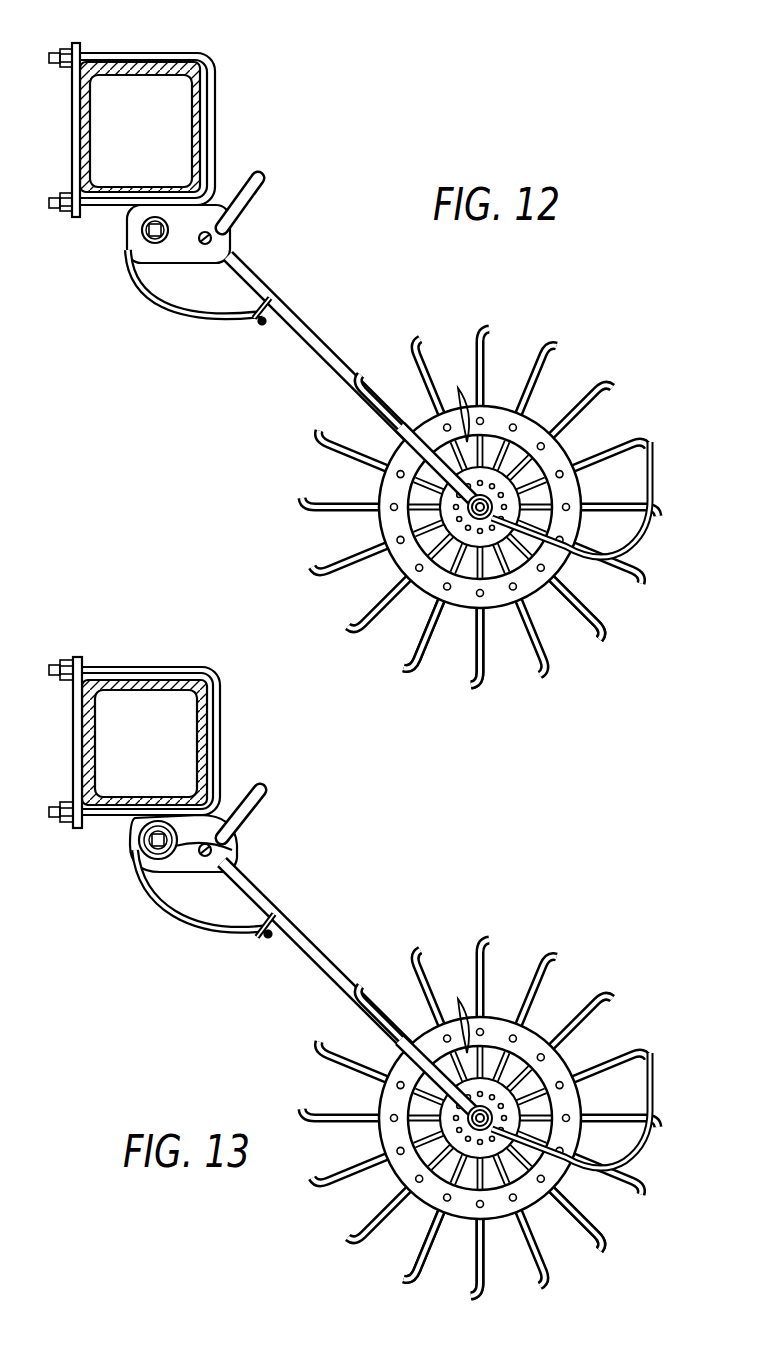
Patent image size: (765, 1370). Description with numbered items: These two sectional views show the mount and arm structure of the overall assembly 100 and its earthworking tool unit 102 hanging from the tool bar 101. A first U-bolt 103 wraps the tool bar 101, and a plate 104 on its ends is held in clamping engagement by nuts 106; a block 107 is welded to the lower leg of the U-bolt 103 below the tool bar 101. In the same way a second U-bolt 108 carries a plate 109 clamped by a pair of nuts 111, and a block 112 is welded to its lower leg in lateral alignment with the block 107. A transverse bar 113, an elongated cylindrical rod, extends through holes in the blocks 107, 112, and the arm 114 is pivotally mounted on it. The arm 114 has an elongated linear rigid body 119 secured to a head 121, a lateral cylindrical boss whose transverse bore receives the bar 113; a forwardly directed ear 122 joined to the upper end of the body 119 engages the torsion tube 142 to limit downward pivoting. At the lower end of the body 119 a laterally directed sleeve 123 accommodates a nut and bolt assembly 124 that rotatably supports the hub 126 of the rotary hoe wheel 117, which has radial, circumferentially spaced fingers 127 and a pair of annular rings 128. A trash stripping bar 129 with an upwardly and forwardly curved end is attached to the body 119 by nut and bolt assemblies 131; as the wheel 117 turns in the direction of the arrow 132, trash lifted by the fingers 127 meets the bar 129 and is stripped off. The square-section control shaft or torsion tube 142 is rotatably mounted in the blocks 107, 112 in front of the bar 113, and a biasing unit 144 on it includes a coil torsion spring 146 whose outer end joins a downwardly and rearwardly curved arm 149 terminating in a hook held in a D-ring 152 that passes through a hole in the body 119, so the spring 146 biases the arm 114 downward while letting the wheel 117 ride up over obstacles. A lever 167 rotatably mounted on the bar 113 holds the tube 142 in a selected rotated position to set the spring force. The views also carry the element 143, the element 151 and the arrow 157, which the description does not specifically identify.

In FIG. 12, the rotary hoe assembly 100 is at (342, 137).
In FIG. 13, the rotary hoe assembly 100 is at (413, 830).
In FIG. 12, the tool bar 101 is at (146, 80).
In FIG. 13, the tool bar 101 is at (146, 695).
In FIG. 12, the rotary hoe unit 102 is at (250, 492).
In FIG. 13, the rotary hoe unit 102 is at (325, 1262).
In FIG. 12, the first U-bolt 103 is at (187, 56).
In FIG. 12, the plate 104 is at (77, 43).
In FIG. 12, the nuts 106 is at (68, 72).
In FIG. 12, the block 107 is at (126, 210).
In FIG. 13, the second U-bolt 108 is at (192, 670).
In FIG. 13, the plate 109 is at (78, 657).
In FIG. 13, the nuts 111 is at (68, 685).
In FIG. 13, the block 112 is at (215, 828).
In FIG. 12, the transverse bar 113 is at (207, 238).
In FIG. 13, the transverse bar 113 is at (210, 849).
In FIG. 12, the arm 114 is at (290, 348).
In FIG. 13, the arm 114 is at (298, 955).
In FIG. 12, the rotary hoe wheel 117 is at (484, 498).
In FIG. 13, the rotary hoe wheel 117 is at (485, 1101).
In FIG. 12, the body 119 is at (335, 345).
In FIG. 13, the body 119 is at (333, 960).
In FIG. 13, the head 121 is at (233, 835).
In FIG. 13, the ear 122 is at (165, 853).
In FIG. 12, the sleeve 123 is at (425, 602).
In FIG. 13, the sleeve 123 is at (428, 1212).
In FIG. 12, the nut and bolt assembly 124 is at (495, 615).
In FIG. 13, the nut and bolt assembly 124 is at (500, 1228).
In FIG. 12, the hub 126 is at (548, 600).
In FIG. 13, the hub 126 is at (548, 1212).
In FIG. 12, the fingers 127 is at (530, 372).
In FIG. 13, the fingers 127 is at (535, 985).
In FIG. 12, the annular rings 128 is at (560, 445).
In FIG. 13, the annular rings 128 is at (572, 1053).
In FIG. 12, the trash stripping bar 129 is at (650, 520).
In FIG. 13, the trash stripping bar 129 is at (650, 1133).
In FIG. 12, the nut and bolt assemblies 131 is at (461, 395).
In FIG. 13, the nut and bolt assemblies 131 is at (462, 1005).
In FIG. 12, the arrow 132 is at (700, 432).
In FIG. 13, the arrow 132 is at (695, 1022).
In FIG. 12, the torsion tube 142 is at (142, 235).
In FIG. 12, the bolt 143 is at (156, 244).
In FIG. 13, the biasing unit 144 is at (120, 860).
In FIG. 13, the first coil torsion spring 146 is at (136, 821).
In FIG. 12, the curved arm 149 is at (158, 300).
In FIG. 13, the curved arm 149 is at (162, 912).
In FIG. 12, the pin head 151 is at (262, 323).
In FIG. 13, the pin head 151 is at (270, 938).
In FIG. 12, the D-ring 152 is at (266, 307).
In FIG. 13, the D-ring 152 is at (265, 936).
In FIG. 12, the direction of arm movement 157 is at (305, 360).
In FIG. 13, the direction of arm movement 157 is at (310, 972).
In FIG. 12, the lever 167 is at (260, 182).
In FIG. 13, the lever 167 is at (263, 790).